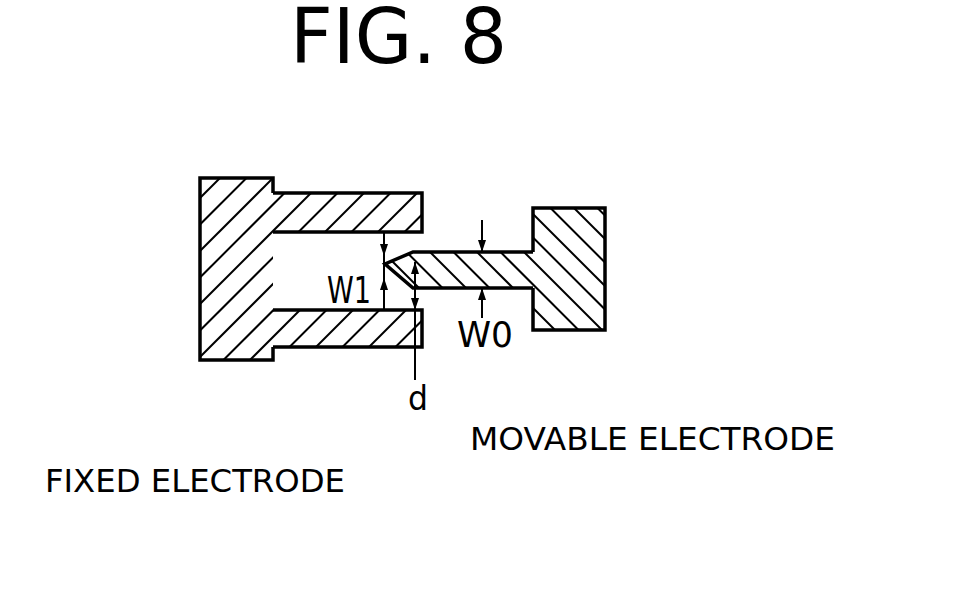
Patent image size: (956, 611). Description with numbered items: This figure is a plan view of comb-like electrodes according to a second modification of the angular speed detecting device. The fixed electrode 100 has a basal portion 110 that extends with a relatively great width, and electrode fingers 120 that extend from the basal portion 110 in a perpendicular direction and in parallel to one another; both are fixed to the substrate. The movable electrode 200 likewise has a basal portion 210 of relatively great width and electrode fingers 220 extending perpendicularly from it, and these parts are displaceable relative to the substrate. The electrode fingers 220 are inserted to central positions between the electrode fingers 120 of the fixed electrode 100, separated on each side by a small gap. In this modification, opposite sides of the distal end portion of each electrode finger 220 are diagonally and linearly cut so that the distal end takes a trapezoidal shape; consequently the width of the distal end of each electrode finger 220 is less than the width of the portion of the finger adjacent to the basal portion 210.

The fixed electrode 100 is at (257, 308).
The basal portion 110 is at (200, 260).
The electrode fingers 120 is at (313, 193).
The movable electrode 200 is at (558, 275).
The basal portion 210 is at (605, 260).
The electrode fingers 220 is at (452, 252).